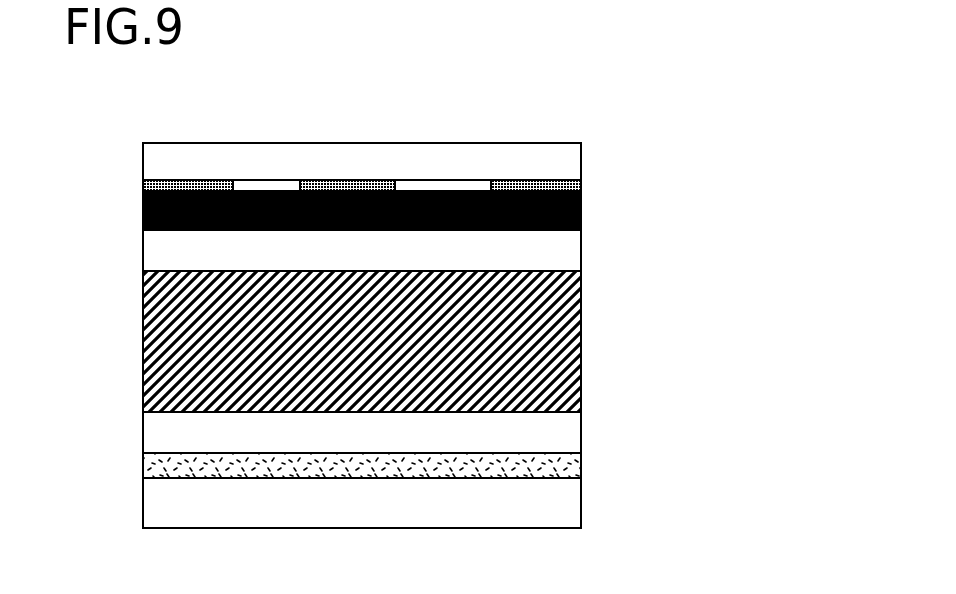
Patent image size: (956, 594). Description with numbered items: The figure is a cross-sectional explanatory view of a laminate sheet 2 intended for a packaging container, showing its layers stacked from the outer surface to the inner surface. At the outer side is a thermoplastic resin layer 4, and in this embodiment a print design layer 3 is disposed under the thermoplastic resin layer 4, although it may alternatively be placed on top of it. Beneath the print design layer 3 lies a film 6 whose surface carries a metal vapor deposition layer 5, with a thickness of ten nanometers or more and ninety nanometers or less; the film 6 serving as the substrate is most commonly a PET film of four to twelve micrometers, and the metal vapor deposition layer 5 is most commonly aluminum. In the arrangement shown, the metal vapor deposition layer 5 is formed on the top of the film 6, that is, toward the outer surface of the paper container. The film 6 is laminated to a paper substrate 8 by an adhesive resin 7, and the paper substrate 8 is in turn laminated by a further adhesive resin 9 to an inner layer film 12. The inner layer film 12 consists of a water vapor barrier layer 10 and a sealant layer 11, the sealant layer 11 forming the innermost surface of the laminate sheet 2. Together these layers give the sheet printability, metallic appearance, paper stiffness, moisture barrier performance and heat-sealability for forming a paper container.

The laminate sheet 2 is at (141, 140).
The print design layer 3 is at (582, 170).
The thermoplastic resin layer 4 is at (557, 157).
The metal vapor deposition layer 5 is at (582, 188).
The film 6 is at (582, 208).
The adhesive resin 7 is at (557, 252).
The paper substrate 8 is at (582, 335).
The adhesive resin 9 is at (546, 430).
The water vapor barrier layer 10 is at (582, 462).
The sealant layer 11 is at (558, 508).
The inner layer film 12 is at (752, 475).